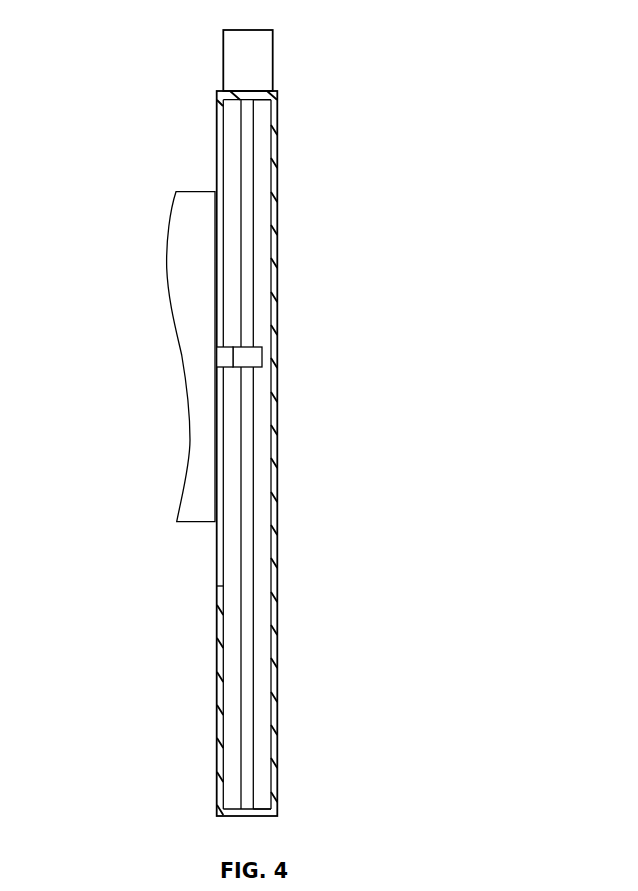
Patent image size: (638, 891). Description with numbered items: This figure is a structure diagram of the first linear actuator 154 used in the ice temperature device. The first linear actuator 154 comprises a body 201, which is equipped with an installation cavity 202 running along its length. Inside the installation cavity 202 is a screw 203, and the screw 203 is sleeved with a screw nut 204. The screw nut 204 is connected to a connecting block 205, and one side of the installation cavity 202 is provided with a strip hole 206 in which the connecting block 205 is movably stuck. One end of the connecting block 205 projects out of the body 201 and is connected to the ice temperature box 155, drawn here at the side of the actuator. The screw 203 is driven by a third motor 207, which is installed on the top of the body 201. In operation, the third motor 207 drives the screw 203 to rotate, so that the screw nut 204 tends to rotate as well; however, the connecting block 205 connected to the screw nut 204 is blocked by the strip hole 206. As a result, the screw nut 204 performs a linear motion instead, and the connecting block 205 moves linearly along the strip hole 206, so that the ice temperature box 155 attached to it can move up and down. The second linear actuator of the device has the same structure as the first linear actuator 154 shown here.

The first linear actuator 154 is at (339, 463).
The ice temperature box 155 is at (167, 357).
The body 201 is at (289, 453).
The installation cavity 202 is at (300, 454).
The screw 203 is at (295, 454).
The screw nut 204 is at (290, 337).
The connecting block 205 is at (171, 342).
The strip hole 206 is at (179, 343).
The third motor 207 is at (286, 60).